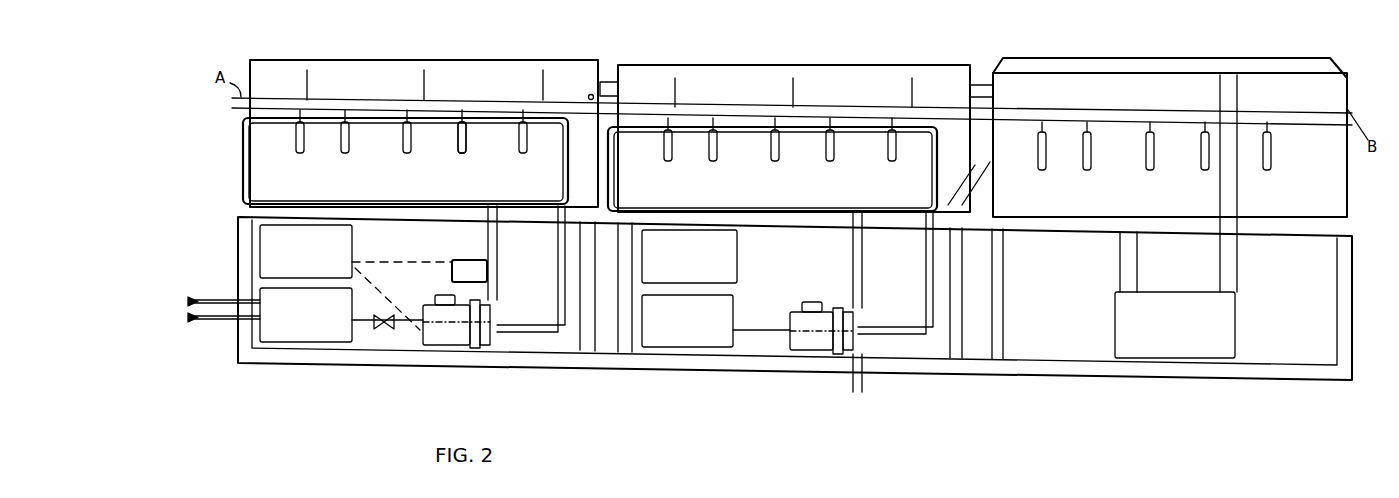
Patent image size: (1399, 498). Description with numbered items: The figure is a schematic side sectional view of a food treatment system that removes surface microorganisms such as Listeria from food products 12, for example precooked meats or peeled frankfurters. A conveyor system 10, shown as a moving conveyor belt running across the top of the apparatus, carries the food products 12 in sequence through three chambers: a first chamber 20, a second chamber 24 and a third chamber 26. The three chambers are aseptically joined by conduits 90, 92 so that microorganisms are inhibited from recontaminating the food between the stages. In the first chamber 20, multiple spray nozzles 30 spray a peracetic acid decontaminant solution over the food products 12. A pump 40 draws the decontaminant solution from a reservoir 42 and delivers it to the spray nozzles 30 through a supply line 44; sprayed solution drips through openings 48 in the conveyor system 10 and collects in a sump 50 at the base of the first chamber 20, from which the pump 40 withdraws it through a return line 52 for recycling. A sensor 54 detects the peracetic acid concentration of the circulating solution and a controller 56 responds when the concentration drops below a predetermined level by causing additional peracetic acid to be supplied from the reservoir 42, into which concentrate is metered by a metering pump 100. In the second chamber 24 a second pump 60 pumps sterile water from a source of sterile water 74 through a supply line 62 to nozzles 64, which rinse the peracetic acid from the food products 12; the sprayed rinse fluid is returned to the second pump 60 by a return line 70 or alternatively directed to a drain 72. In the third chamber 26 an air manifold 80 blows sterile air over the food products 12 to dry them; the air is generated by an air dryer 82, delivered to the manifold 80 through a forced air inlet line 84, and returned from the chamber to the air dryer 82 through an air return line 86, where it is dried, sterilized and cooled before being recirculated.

The conveyor system 10 is at (277, 103).
The food products 12 is at (463, 128).
The first chamber 20 is at (368, 78).
The second chamber 24 is at (706, 80).
The third chamber 26 is at (1030, 97).
The spray nozzles 30 is at (305, 128).
The pump 40 is at (453, 316).
The reservoir 42 is at (341, 315).
The supply line 44 is at (560, 320).
The openings 48 is at (772, 169).
The sump 50 is at (405, 161).
The return line 52 is at (486, 264).
The sensor 54 is at (469, 271).
The controller 56 is at (356, 277).
The second pump 60 is at (800, 306).
The supply line 62 is at (930, 316).
The nozzles 64 is at (673, 136).
The return line 70 is at (855, 263).
The drain 72 is at (852, 385).
The source of sterile water 74 is at (716, 321).
The air manifold 80 is at (1147, 65).
The air dryer 82 is at (1175, 325).
The forced air inlet line 84 is at (1228, 193).
The air return line 86 is at (1120, 272).
The conduit 90 is at (608, 82).
The conduit 92 is at (985, 82).
The metering pump 100 is at (215, 297).